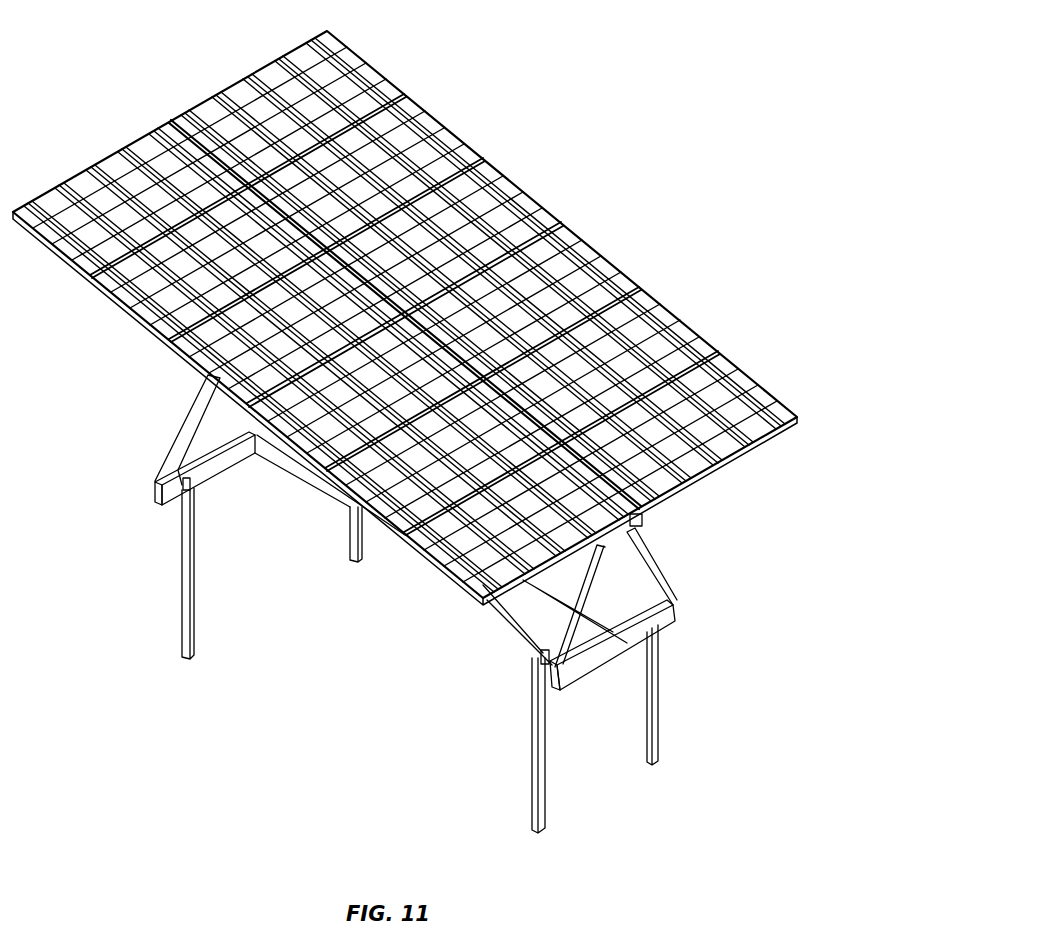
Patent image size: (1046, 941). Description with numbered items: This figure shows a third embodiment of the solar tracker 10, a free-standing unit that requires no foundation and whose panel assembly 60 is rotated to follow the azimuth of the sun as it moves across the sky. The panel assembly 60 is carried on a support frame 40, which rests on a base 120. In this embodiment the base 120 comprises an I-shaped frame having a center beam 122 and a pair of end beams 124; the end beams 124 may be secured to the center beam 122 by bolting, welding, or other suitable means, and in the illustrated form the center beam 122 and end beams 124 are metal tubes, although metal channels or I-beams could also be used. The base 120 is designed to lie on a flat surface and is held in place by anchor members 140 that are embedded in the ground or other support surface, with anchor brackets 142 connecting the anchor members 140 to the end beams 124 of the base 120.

The solar tracker 10 is at (600, 128).
The panel assembly 60 is at (210, 60).
The support frame 40 is at (168, 424).
The base 120 is at (614, 720).
The center beam 122 is at (330, 485).
The end beams 124 is at (212, 470).
The anchor members 140 is at (192, 628).
The anchor brackets 142 is at (190, 478).